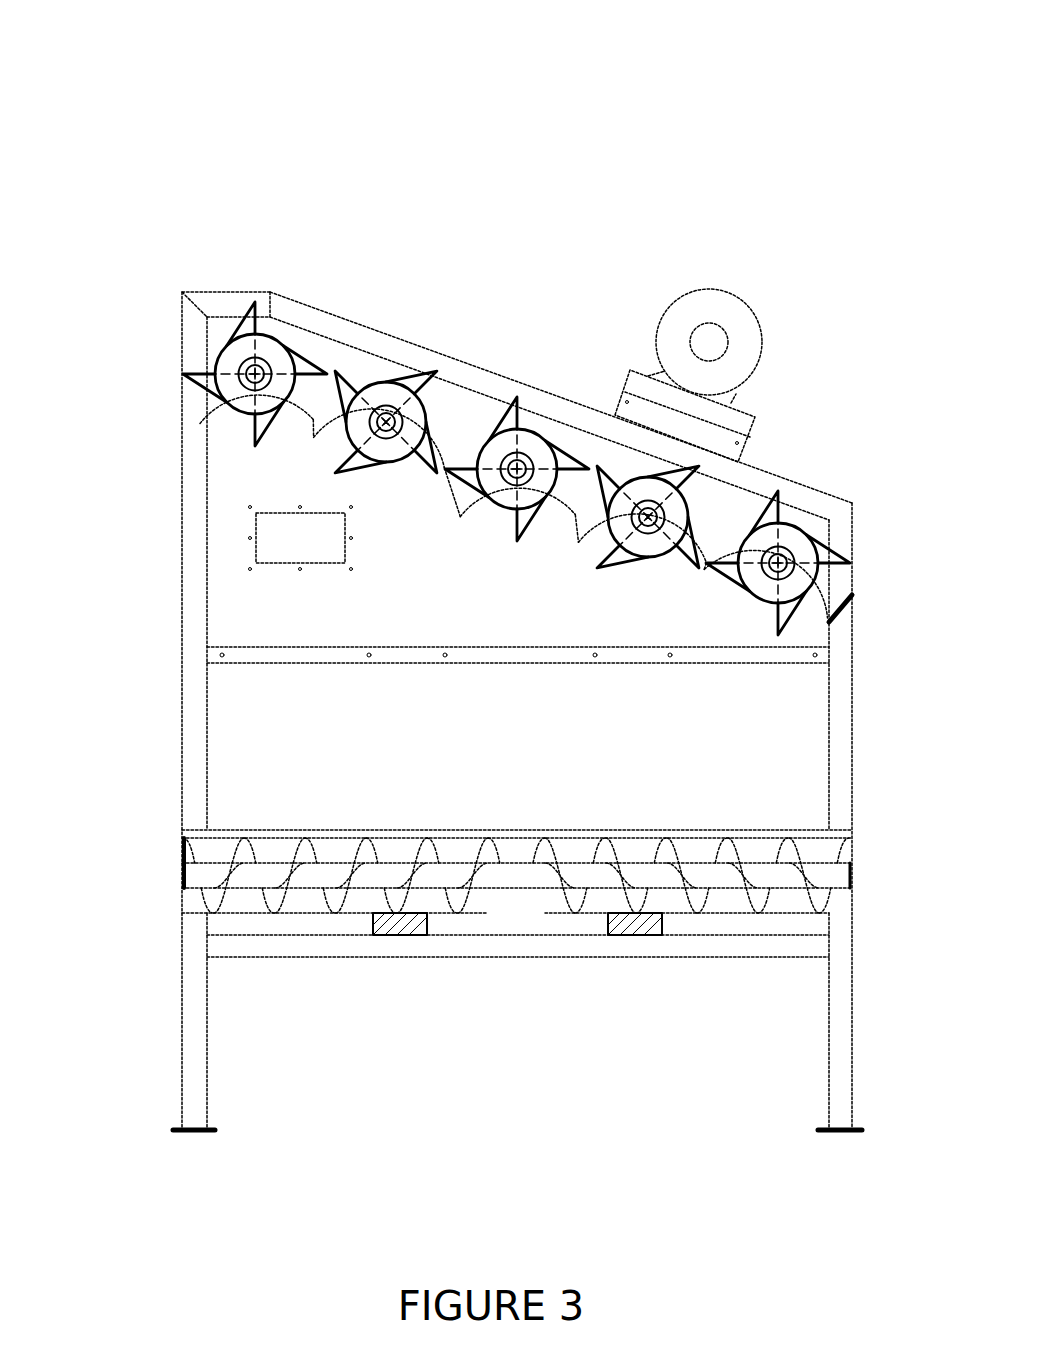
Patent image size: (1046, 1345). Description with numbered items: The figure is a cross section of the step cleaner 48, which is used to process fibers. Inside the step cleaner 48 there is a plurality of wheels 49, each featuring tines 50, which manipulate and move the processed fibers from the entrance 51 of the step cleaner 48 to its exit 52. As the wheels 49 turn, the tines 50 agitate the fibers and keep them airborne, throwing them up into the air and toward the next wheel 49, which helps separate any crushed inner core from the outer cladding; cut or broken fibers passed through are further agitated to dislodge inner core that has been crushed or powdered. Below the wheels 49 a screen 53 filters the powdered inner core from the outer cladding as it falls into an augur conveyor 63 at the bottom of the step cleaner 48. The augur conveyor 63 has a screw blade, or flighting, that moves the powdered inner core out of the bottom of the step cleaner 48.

The step cleaner 48 is at (587, 367).
The wheels 49 is at (277, 342).
The tines 50 is at (437, 368).
The entrance 51 is at (852, 563).
The exit 52 is at (182, 349).
The screen 53 is at (462, 517).
The augur conveyor 63 is at (517, 863).